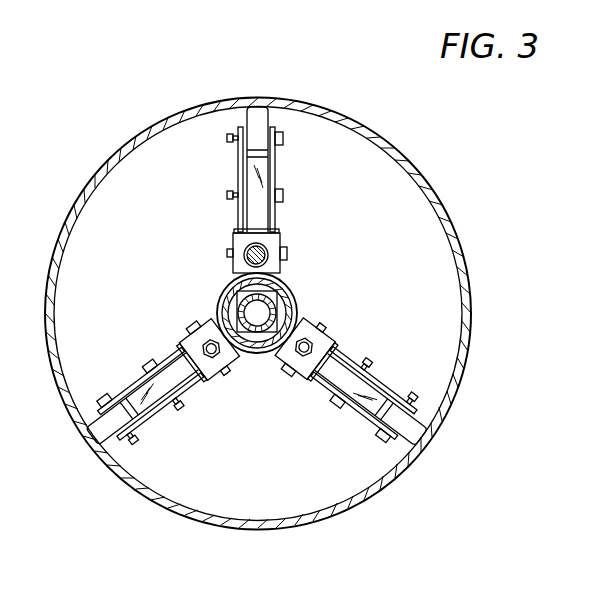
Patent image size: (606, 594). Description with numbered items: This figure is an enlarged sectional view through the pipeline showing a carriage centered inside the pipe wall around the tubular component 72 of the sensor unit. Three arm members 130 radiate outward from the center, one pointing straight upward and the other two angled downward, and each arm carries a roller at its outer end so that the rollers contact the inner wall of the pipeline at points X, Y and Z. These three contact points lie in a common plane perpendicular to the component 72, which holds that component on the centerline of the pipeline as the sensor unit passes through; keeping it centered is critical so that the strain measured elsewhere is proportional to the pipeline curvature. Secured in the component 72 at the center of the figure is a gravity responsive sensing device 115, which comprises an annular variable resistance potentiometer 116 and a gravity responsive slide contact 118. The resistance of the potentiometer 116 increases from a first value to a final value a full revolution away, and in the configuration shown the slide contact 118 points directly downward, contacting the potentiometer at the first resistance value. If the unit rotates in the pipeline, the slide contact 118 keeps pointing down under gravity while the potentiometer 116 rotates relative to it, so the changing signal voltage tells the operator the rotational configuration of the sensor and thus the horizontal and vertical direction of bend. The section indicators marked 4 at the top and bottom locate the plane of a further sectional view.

The section line 4- 4 is at (257, 53).
The component 72 is at (222, 299).
The gravity responsive sensing device 115 is at (283, 308).
The annular variable resistance potentiometer 116 is at (285, 300).
The gravity responsive slide contact 118 is at (257, 314).
The arm members 130 is at (280, 175).
The contact point x X is at (270, 99).
The contact point y Y is at (427, 445).
The contact point z Z is at (92, 432).